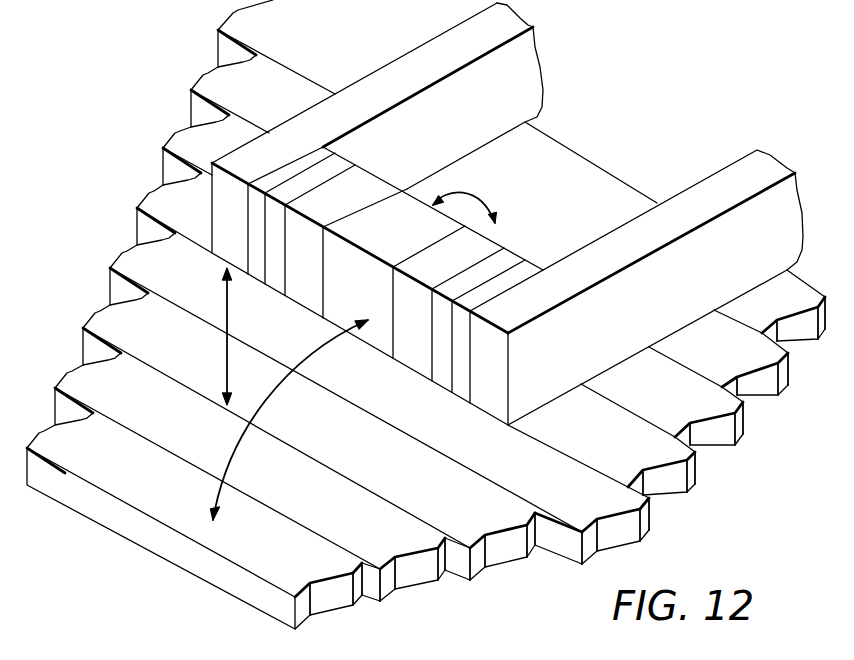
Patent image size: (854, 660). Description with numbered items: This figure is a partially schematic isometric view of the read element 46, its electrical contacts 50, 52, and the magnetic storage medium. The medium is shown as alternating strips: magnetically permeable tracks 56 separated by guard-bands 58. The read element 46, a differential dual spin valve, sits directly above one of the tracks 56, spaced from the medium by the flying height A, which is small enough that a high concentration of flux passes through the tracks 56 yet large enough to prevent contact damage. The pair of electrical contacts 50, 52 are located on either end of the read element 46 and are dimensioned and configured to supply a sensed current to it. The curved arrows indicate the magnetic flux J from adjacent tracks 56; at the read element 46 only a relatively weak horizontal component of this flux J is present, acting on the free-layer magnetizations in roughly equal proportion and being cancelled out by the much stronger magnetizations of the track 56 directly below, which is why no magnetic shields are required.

The read element 46 is at (364, 304).
The electrical contact 50 is at (595, 351).
The electrical contact 52 is at (452, 134).
The magnetically permeable track 56 is at (109, 462).
The guard-band 58 is at (135, 402).
The flying height A is at (226, 364).
The magnetic flux J is at (502, 210).